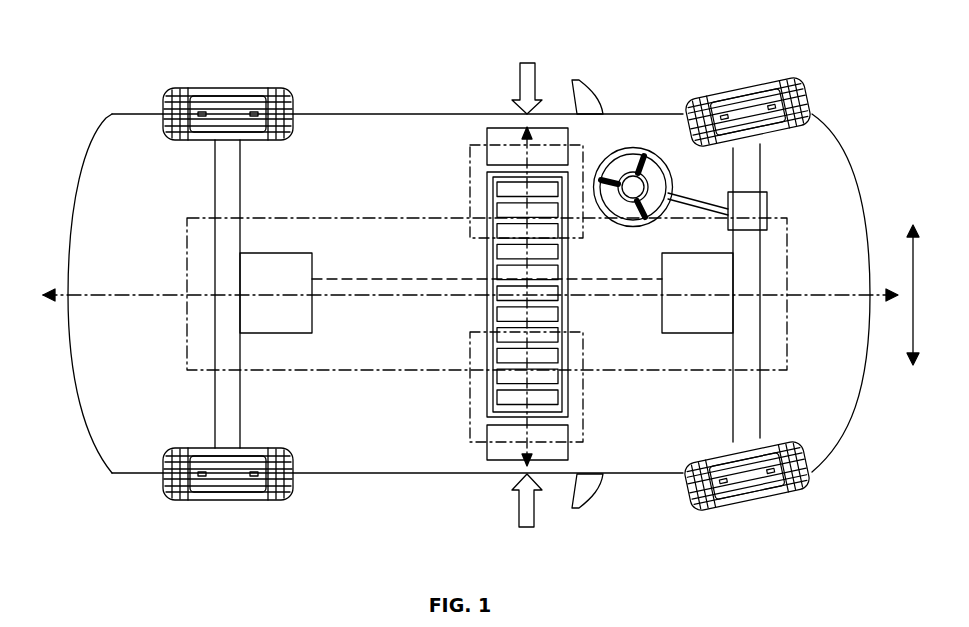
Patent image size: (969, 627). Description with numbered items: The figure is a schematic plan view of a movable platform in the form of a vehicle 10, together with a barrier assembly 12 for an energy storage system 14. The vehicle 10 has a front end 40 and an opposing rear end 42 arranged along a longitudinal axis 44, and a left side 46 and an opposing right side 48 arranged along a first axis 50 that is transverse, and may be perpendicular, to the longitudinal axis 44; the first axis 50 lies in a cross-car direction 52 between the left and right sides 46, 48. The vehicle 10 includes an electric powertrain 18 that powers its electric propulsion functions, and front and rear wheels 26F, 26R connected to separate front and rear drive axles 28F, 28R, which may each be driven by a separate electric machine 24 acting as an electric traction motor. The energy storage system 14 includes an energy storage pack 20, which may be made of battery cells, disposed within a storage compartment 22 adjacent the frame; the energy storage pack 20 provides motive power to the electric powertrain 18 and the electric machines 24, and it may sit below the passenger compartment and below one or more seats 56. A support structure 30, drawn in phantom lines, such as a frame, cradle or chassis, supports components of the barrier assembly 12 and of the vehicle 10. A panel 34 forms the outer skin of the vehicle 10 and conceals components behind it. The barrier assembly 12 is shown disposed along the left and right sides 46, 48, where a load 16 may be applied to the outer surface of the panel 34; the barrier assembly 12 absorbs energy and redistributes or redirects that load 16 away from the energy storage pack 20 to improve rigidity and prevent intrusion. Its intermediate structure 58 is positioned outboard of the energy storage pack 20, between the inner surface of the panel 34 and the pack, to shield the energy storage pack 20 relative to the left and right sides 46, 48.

The vehicle 10 is at (474, 286).
The barrier assembly 12 is at (508, 100).
The energy storage system 14 is at (455, 395).
The load 16 is at (540, 88).
The electric powertrain 18 is at (486, 333).
The energy storage pack 20 is at (524, 294).
The storage compartment 22 is at (487, 262).
The electric machines 24 is at (275, 337).
The rear wheels 26R is at (228, 503).
The front wheels 26F is at (755, 497).
The rear drive axle 28R is at (215, 405).
The front drive axle 28F is at (762, 405).
The support structure 30 is at (285, 218).
The panel 34 is at (313, 113).
The front end 40 is at (850, 164).
The rear end 42 is at (76, 418).
The longitudinal axis 44 is at (60, 300).
The left side 46 is at (672, 113).
The right side 48 is at (660, 476).
The first axis 50 is at (530, 150).
The cross-car direction 52 is at (910, 247).
The seats 56 is at (470, 165).
The intermediate structure 58 is at (487, 134).